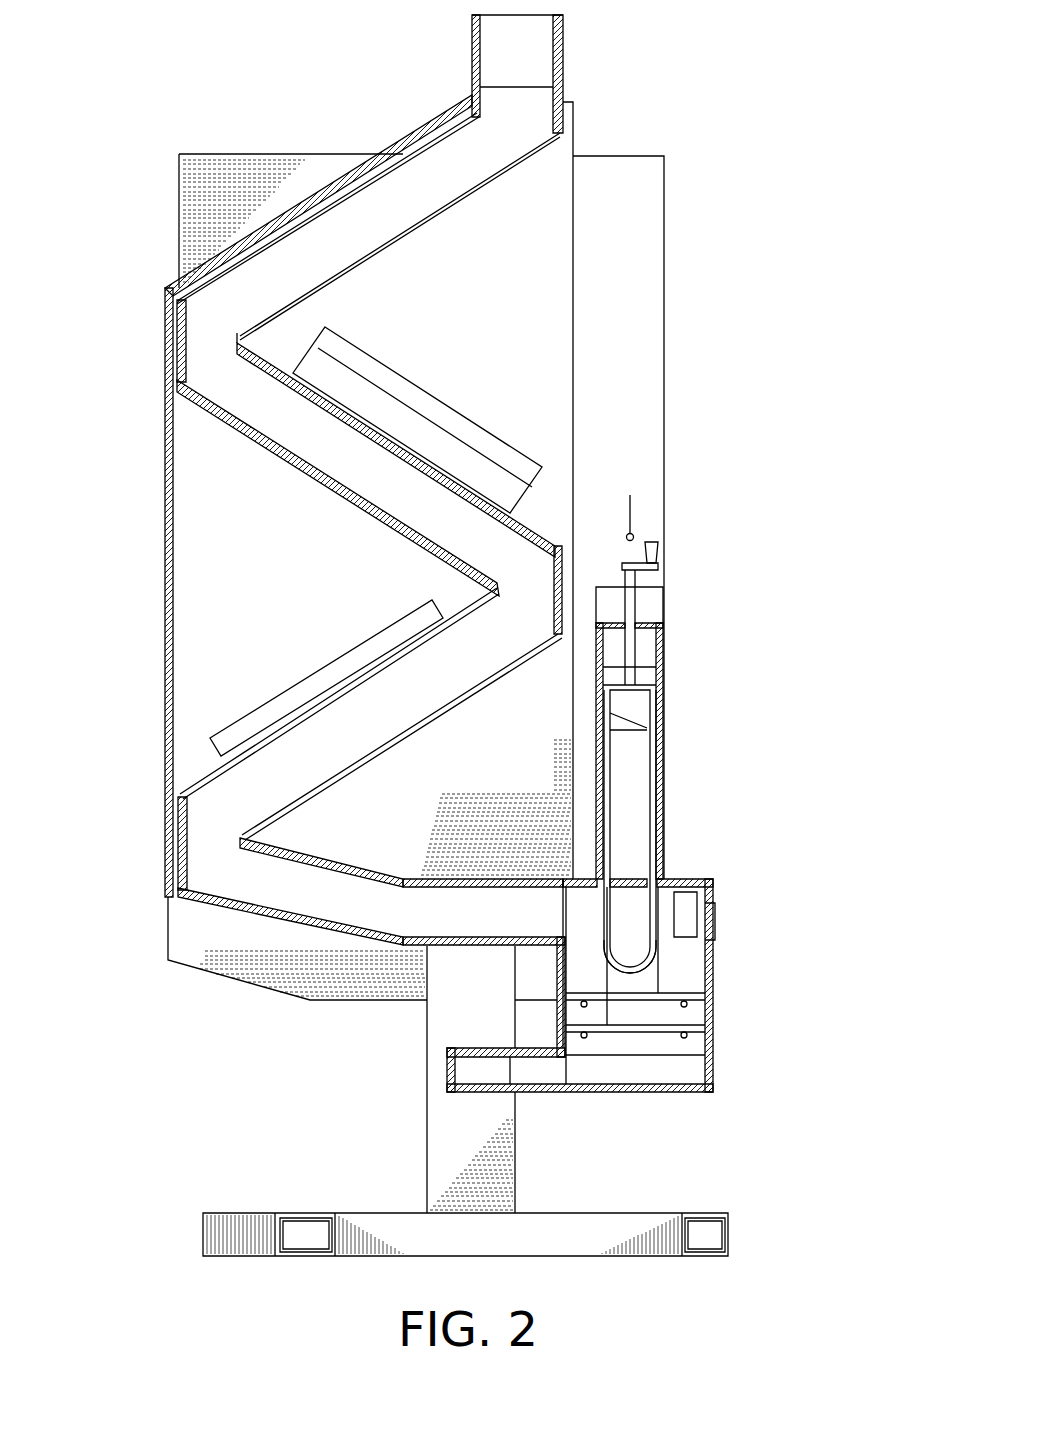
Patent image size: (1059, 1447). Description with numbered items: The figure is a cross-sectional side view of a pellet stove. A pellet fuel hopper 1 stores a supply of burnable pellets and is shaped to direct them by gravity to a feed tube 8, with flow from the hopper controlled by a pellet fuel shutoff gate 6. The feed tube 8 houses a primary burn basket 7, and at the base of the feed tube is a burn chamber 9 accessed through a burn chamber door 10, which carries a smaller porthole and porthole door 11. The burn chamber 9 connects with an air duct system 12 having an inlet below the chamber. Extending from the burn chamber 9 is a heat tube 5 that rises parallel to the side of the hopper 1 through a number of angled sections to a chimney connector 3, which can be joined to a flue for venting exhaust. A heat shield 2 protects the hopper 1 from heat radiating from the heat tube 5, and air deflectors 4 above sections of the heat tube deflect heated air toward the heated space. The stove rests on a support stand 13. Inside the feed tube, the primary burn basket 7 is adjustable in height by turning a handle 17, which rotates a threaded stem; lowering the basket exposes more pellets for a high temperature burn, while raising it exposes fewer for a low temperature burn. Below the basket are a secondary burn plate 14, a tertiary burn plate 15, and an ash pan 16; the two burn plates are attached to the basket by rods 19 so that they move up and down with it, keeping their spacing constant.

The pellet fuel hopper 1 is at (642, 262).
The heat shield 2 is at (167, 562).
The chimney connector 3 is at (563, 55).
The air deflector 4 is at (418, 385).
The heat tube 5 is at (340, 460).
The pellet fuel shutoff gate 6 is at (633, 536).
The primary burn basket 7 is at (655, 840).
The feed tube 8 is at (664, 650).
The burn chamber 9 is at (580, 905).
The burn chamber door 10 is at (712, 880).
The porthole door 11 is at (715, 913).
The air duct system 12 is at (447, 1064).
The support stand 13 is at (587, 1213).
The secondary burn plate 14 is at (693, 990).
The tertiary burn plate 15 is at (693, 1028).
The ash pan 16 is at (688, 1071).
The handle 17 is at (660, 551).
The rods 19 is at (657, 975).